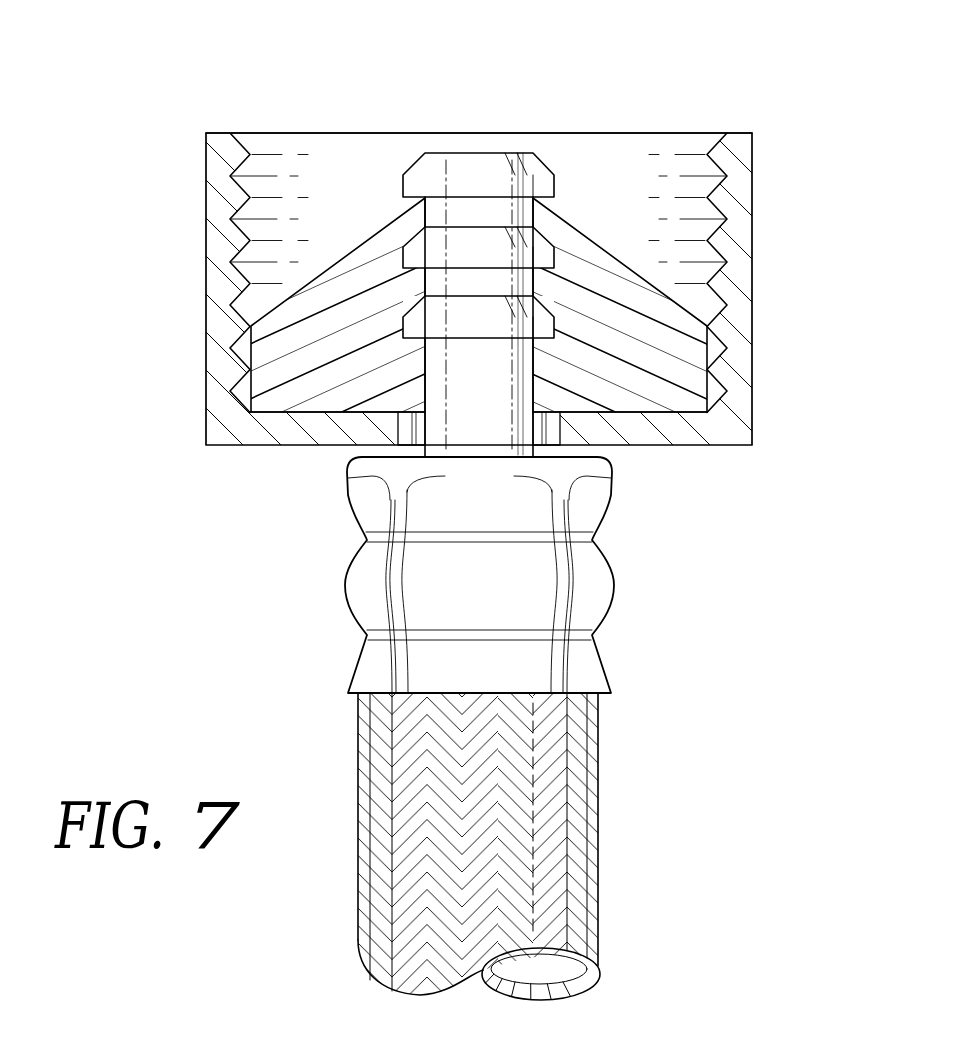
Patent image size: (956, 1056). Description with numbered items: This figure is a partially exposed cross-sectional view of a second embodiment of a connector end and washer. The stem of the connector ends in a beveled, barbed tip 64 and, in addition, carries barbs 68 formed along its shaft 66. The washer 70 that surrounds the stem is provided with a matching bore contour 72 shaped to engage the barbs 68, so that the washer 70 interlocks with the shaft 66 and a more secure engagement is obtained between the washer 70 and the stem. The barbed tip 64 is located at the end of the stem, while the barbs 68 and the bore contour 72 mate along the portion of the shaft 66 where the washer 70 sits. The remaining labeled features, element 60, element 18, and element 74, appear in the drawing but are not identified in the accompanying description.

The connector assembly 60 is at (185, 118).
The fitting body 18 is at (553, 152).
The barbed tip 64 is at (523, 153).
The shaft 66 is at (490, 382).
The barbs 68 is at (547, 257).
The washer 70 is at (347, 260).
The bore contour 72 is at (403, 253).
The threaded housing 74 is at (213, 209).